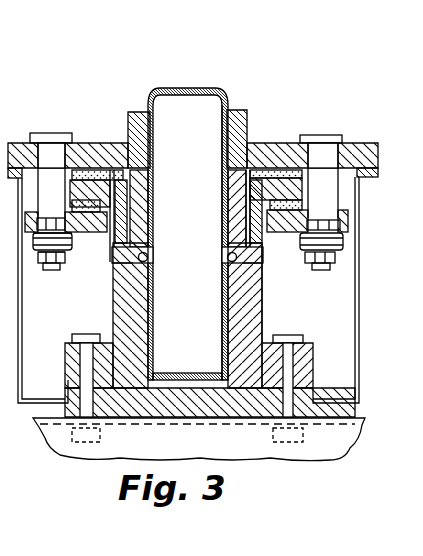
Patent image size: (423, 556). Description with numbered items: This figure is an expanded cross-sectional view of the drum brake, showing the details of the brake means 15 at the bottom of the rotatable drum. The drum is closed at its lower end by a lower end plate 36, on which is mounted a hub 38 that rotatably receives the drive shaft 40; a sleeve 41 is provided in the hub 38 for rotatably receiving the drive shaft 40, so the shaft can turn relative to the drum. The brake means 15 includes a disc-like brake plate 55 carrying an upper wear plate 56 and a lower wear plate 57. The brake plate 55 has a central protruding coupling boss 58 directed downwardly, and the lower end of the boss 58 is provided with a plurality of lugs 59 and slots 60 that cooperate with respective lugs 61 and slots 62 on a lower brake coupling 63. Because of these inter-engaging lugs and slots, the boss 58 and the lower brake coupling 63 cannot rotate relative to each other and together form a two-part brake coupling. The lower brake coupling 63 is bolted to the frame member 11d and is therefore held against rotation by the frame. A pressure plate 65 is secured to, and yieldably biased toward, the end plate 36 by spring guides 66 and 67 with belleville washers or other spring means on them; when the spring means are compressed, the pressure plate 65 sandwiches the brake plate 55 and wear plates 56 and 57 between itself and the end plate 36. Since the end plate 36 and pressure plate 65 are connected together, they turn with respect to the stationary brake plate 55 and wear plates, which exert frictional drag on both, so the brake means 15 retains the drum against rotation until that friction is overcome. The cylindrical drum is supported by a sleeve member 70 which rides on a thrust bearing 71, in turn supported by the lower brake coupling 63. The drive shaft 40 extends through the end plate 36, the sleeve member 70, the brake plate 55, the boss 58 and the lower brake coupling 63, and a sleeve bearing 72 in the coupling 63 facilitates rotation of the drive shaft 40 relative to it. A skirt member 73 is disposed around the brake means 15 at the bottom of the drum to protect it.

The brake means 15 is at (290, 101).
The lower end plate 36 is at (357, 147).
The hub 38 is at (128, 113).
The drive shaft 40 is at (178, 107).
The sleeve 41 is at (226, 110).
The brake plate 55 is at (150, 189).
The upper wear plate 56 is at (150, 173).
The lower wear plate 57 is at (150, 209).
The coupling boss 58 is at (150, 235).
The lugs 59 is at (263, 256).
The slots 60 is at (100, 260).
The lugs 61 is at (104, 277).
The slots 62 is at (263, 293).
The lower brake coupling 63 is at (263, 321).
The pressure plate 65 is at (248, 229).
The spring guide 66 is at (56, 145).
The spring guide 67 is at (322, 147).
The sleeve member 70 is at (219, 187).
The thrust bearing 71 is at (150, 255).
The sleeve bearing 72 is at (150, 343).
The skirt member 73 is at (25, 334).
The frame member 11d is at (128, 456).